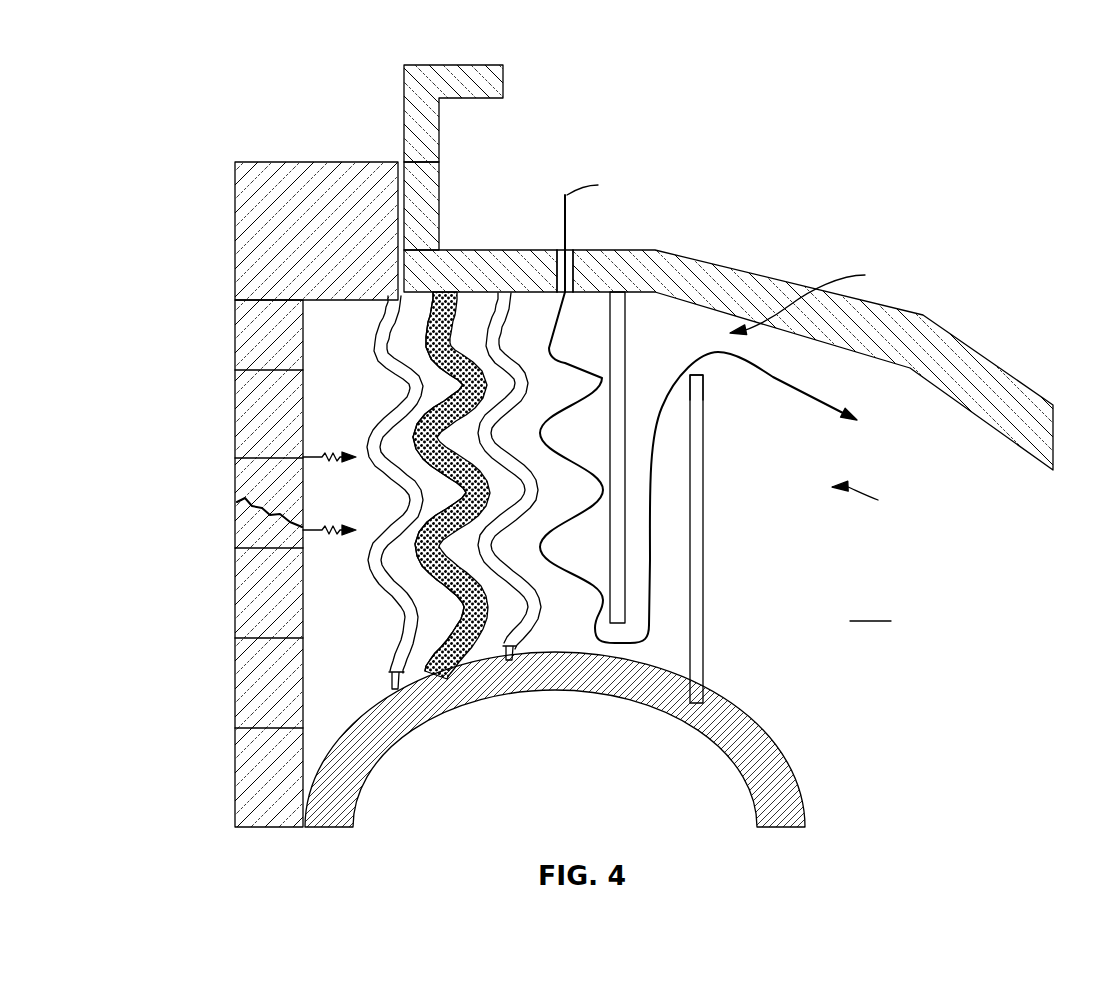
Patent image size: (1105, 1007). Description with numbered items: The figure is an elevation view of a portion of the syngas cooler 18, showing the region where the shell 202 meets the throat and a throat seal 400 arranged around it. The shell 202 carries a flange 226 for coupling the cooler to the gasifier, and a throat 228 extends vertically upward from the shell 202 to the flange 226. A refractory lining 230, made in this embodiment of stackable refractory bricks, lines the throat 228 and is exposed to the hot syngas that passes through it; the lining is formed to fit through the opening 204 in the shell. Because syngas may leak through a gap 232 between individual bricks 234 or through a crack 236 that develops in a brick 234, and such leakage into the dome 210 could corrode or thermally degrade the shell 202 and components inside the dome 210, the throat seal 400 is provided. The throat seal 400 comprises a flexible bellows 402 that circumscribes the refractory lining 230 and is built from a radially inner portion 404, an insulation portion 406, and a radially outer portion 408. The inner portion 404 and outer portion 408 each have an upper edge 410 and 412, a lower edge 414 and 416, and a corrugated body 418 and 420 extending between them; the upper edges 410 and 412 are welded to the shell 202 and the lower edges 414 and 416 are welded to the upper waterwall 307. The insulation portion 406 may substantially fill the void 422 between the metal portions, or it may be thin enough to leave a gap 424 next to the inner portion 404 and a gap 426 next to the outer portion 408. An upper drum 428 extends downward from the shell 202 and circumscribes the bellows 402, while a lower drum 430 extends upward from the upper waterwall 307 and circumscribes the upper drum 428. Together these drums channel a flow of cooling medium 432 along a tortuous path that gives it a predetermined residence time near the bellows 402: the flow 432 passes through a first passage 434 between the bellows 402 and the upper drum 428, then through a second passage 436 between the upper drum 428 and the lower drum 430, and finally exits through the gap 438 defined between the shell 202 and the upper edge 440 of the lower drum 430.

The syngas cooler 18 is at (906, 78).
The shell 202 is at (978, 355).
The opening 204 is at (279, 107).
The dome 210 is at (870, 607).
The flange 226 is at (503, 82).
The throat 228 is at (438, 145).
The refractory lining 230 is at (328, 162).
The gap 232 is at (305, 455).
The brick 234 is at (235, 407).
The crack 236 is at (307, 525).
The upper waterwall 307 is at (788, 758).
The throat seal 400 is at (877, 500).
The flexible bellows 402 is at (431, 477).
The radially inner portion 404 is at (363, 493).
The insulation portion 406 is at (431, 517).
The radially outer portion 408 is at (523, 642).
The upper edge 410 is at (380, 315).
The upper edge 412 is at (527, 479).
The lower edge 414 is at (387, 690).
The lower edge 416 is at (508, 660).
The corrugated body 418 is at (357, 483).
The corrugated body 420 is at (433, 427).
The void 422 is at (443, 612).
The gap 424 is at (398, 335).
The gap 426 is at (570, 362).
The upper drum 428 is at (627, 333).
The lower drum 430 is at (739, 539).
The flow of cooling medium 432 is at (813, 398).
The first passage 434 is at (590, 307).
The second passage 436 is at (670, 622).
The gap 438 is at (820, 297).
The upper edge 440 is at (705, 380).